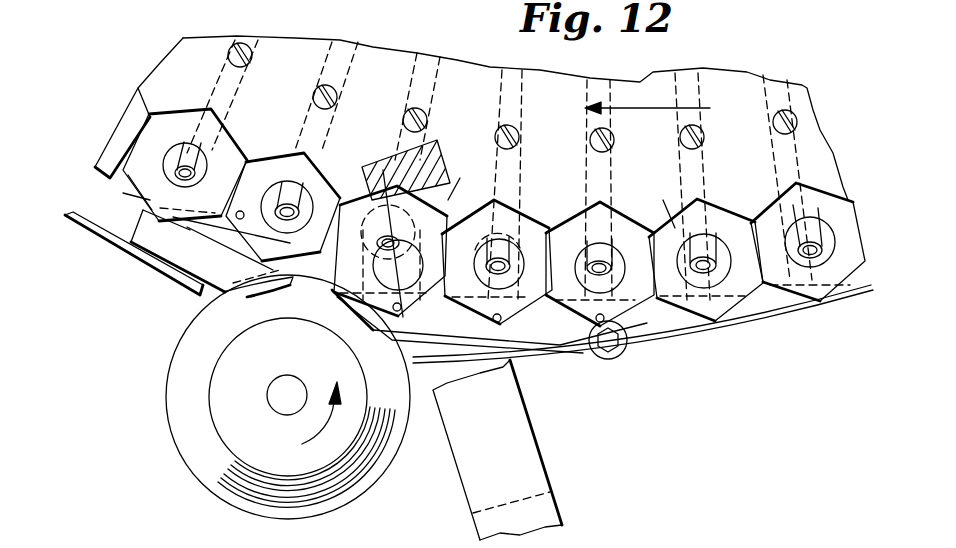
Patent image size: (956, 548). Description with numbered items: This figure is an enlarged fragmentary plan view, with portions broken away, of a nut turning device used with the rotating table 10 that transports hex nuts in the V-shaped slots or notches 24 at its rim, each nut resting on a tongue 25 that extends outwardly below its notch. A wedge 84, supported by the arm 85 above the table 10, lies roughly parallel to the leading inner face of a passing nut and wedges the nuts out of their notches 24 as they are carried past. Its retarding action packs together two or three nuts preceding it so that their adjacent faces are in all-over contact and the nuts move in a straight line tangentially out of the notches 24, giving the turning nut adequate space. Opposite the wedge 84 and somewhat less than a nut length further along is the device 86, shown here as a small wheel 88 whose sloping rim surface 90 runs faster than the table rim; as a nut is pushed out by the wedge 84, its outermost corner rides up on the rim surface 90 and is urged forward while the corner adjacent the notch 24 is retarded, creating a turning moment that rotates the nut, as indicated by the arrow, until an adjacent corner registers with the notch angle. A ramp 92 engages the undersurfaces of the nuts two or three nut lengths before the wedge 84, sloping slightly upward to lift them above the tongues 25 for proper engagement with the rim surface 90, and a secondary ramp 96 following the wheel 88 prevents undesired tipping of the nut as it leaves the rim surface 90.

The table 10 is at (750, 87).
The V-shaped slots or notches 24 is at (572, 213).
The tongue 25 is at (243, 238).
The wedge 84 is at (367, 163).
The arm 85 is at (542, 447).
The device 86 is at (235, 411).
The wheel 88 is at (317, 455).
The sloping rim surface 90 is at (203, 463).
The ramp 92 is at (545, 350).
The secondary ramp 96 is at (217, 287).